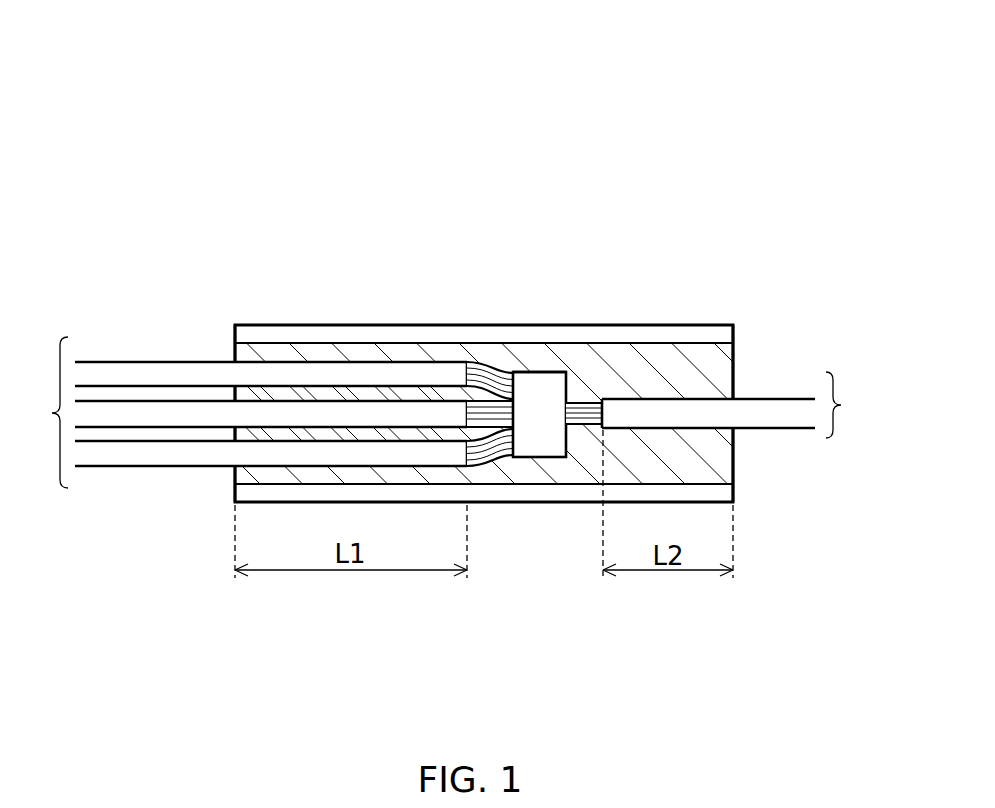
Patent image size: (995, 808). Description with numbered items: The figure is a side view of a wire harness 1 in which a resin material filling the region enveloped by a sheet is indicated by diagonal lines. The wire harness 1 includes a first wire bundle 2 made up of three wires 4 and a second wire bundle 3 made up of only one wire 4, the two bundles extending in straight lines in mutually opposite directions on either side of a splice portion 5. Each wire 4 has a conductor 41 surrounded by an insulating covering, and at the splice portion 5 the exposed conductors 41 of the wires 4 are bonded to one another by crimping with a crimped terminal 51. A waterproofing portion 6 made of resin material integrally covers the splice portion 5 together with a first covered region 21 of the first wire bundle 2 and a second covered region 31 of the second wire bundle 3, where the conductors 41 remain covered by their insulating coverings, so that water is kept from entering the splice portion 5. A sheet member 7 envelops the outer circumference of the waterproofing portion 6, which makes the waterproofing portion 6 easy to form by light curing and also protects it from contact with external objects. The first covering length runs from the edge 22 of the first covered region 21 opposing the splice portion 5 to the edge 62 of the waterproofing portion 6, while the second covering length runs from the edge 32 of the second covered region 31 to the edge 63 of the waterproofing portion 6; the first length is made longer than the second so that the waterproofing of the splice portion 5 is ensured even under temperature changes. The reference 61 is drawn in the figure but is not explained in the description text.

The wire harness 1 is at (780, 178).
The first wire bundle 2 is at (133, 412).
The second wire bundle 3 is at (714, 405).
The wire 4 is at (150, 458).
The splice portion 5 is at (543, 460).
The waterproofing portion 6 is at (443, 355).
The sheet member 7 is at (637, 333).
The first covered region 21 is at (374, 360).
The edge of the covered region 22 is at (470, 468).
The second covered region 31 is at (683, 395).
The edge of the covered region 32 is at (603, 430).
The conductor 41 is at (497, 376).
The crimped terminal 51 is at (550, 380).
The inter-fiber resin layer 61 is at (333, 434).
The edge of the waterproofing portion 62 is at (235, 478).
The edge of the waterproofing portion 63 is at (735, 457).